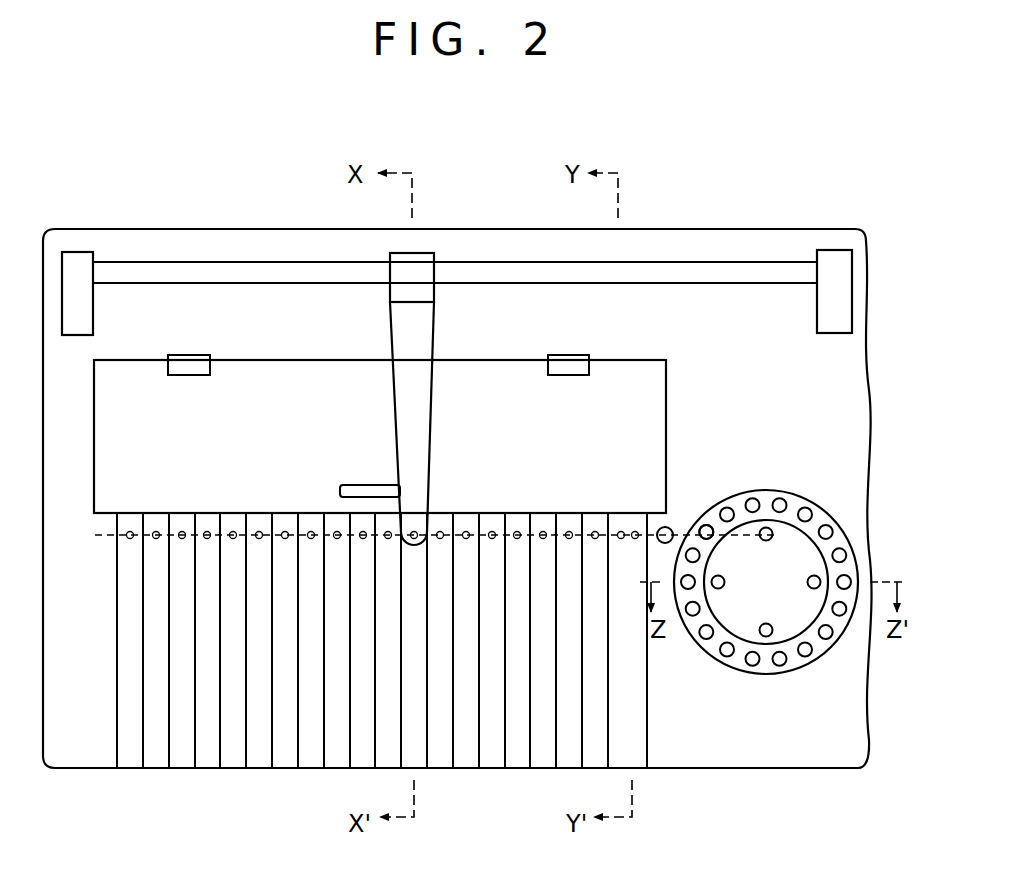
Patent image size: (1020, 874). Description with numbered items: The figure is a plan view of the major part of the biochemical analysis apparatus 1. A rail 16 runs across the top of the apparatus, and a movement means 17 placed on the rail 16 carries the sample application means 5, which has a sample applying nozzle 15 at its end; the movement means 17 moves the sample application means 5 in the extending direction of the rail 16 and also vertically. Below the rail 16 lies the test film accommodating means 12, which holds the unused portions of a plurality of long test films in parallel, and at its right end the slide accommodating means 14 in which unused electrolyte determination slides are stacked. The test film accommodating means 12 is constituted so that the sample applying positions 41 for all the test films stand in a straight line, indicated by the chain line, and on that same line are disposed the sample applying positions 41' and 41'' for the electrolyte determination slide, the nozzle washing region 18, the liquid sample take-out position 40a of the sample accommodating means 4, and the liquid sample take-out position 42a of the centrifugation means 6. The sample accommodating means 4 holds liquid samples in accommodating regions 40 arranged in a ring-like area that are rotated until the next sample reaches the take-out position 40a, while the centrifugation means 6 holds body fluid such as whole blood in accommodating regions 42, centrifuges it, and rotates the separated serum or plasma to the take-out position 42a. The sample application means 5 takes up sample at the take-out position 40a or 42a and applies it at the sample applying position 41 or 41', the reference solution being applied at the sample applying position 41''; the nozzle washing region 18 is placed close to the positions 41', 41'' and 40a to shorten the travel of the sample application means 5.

The biochemical analysis apparatus 1 is at (723, 192).
The sample accommodating means 4 is at (830, 512).
The sample application means 5 is at (400, 452).
The centrifugation means 6 is at (780, 556).
The test film accommodating means 12 is at (165, 490).
The slide accommodating means 14 is at (650, 427).
The sample applying nozzle 15 is at (428, 504).
The rail 16 is at (518, 272).
The movement means 17 is at (425, 267).
The nozzle washing region 18 is at (667, 526).
The accommodating regions 40 is at (850, 580).
The liquid sample take-out position 40a is at (705, 525).
The sample applying positions 41 is at (363, 498).
The sample applying position 41' is at (595, 506).
The sample applying position 41'' is at (634, 506).
The accommodating regions 42 is at (814, 588).
The liquid sample take-out position 42a is at (767, 526).